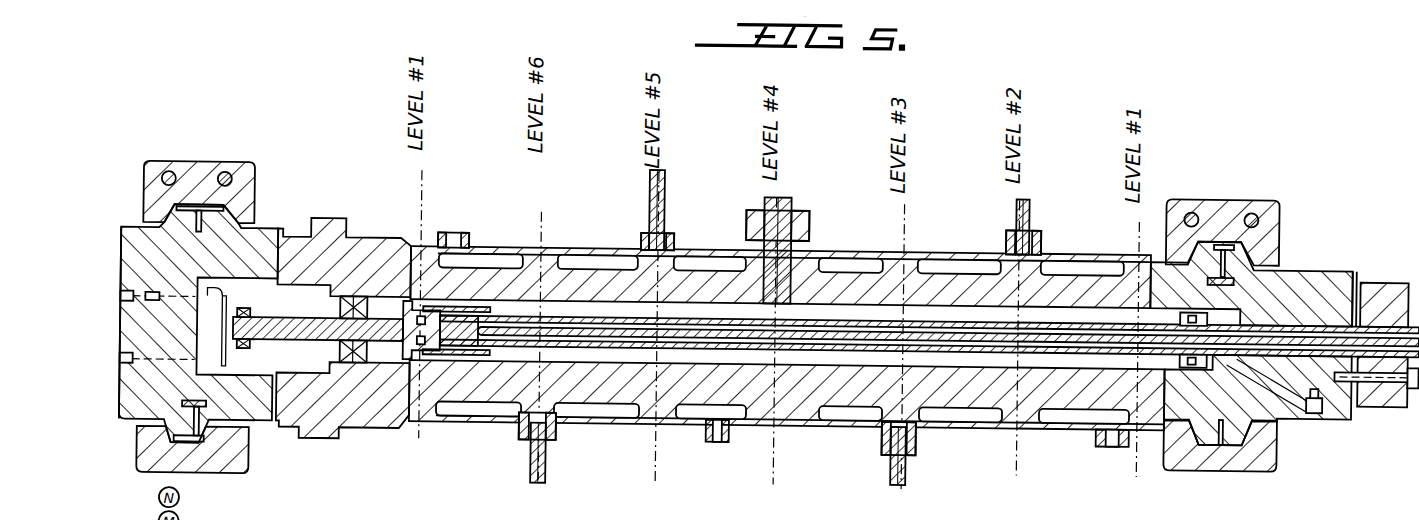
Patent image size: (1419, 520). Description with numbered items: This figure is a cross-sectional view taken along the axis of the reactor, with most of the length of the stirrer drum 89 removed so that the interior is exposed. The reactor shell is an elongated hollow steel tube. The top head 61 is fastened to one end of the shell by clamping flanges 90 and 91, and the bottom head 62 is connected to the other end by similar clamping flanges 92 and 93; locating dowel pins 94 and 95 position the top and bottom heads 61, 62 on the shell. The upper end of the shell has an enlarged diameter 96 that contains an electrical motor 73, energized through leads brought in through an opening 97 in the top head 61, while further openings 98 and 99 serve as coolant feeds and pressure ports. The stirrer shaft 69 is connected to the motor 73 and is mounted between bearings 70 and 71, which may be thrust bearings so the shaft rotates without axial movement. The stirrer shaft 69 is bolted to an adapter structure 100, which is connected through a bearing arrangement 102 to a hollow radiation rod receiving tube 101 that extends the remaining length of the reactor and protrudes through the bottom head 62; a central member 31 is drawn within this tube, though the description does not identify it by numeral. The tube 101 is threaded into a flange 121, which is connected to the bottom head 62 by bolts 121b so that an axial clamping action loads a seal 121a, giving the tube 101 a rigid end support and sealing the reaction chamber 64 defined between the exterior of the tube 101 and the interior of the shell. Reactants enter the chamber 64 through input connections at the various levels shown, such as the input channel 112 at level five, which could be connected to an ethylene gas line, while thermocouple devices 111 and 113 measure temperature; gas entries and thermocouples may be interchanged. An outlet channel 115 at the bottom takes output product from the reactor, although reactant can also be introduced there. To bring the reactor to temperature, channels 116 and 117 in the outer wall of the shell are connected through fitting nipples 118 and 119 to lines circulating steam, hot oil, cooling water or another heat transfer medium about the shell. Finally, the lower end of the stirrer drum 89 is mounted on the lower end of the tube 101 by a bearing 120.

The drive shaft 31 is at (690, 328).
The top head 61 is at (140, 232).
The bottom head 62 is at (1318, 268).
The main reaction chamber 64 is at (940, 316).
The stirrer shaft 69 is at (404, 303).
The bearing 70 is at (243, 325).
The bearing 71 is at (345, 368).
The electrical motor 73 is at (283, 320).
The stirrer drum 89 is at (482, 358).
The clamping flange 90 is at (237, 467).
The clamping flange 91 is at (207, 166).
The clamping flange 92 is at (1272, 458).
The clamping flange 93 is at (1232, 188).
The dowel pin 94 is at (207, 408).
The dowel pin 95 is at (1237, 272).
The enlarged diameter 96 is at (350, 300).
The opening 97 is at (122, 380).
The opening 98 is at (133, 338).
The opening 99 is at (133, 283).
The adapter structure 100 is at (458, 234).
The rod receiving tube 101 is at (453, 358).
The bearing arrangement 102 is at (412, 405).
The thermocouple device 111 is at (557, 450).
The input channel 112 is at (640, 240).
The thermocouple device 113 is at (917, 447).
The outlet channel 115 is at (1300, 406).
The channel 116 is at (498, 262).
The channel 117 is at (863, 250).
The fitting nipple 118 is at (470, 250).
The fitting nipple 119 is at (850, 262).
The bearing 120 is at (1183, 355).
The flange 121 is at (1387, 282).
The seal 121a is at (1350, 275).
The bolts 121b is at (1413, 400).